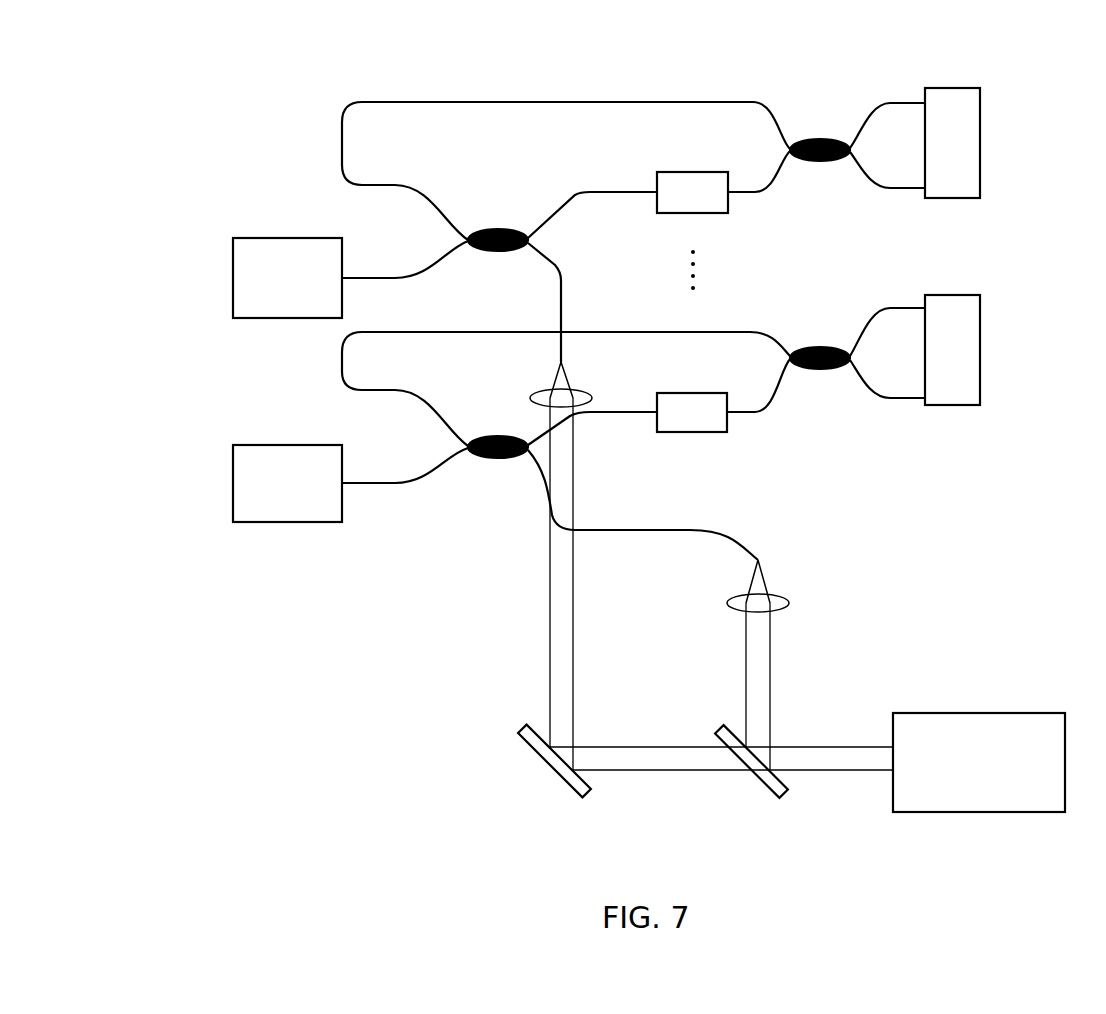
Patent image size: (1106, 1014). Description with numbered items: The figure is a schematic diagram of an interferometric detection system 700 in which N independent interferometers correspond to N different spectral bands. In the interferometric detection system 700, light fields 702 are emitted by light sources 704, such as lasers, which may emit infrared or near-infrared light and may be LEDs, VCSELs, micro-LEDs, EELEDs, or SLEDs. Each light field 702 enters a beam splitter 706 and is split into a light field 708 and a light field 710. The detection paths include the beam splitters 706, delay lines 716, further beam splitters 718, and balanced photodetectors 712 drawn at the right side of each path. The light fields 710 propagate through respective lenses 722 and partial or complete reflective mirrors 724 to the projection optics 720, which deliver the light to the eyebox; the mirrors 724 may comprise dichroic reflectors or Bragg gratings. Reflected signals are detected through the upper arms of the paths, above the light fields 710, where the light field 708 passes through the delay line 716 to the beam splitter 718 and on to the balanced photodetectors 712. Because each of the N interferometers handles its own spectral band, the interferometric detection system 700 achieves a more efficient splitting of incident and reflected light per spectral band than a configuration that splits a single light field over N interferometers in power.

The interferometric detection system 700 is at (626, 30).
The light field 702 is at (378, 276).
The light source 704 is at (290, 238).
The beam splitter 706 is at (496, 229).
The light field 708 is at (574, 192).
The light field 710 is at (562, 290).
The balanced photodetector 712 is at (982, 135).
The delay line 716 is at (700, 172).
The beam splitter 718 is at (810, 140).
The projection optics 720 is at (975, 725).
The lens 722 is at (592, 397).
The partial (or complete) reflective mirror 724 is at (530, 733).